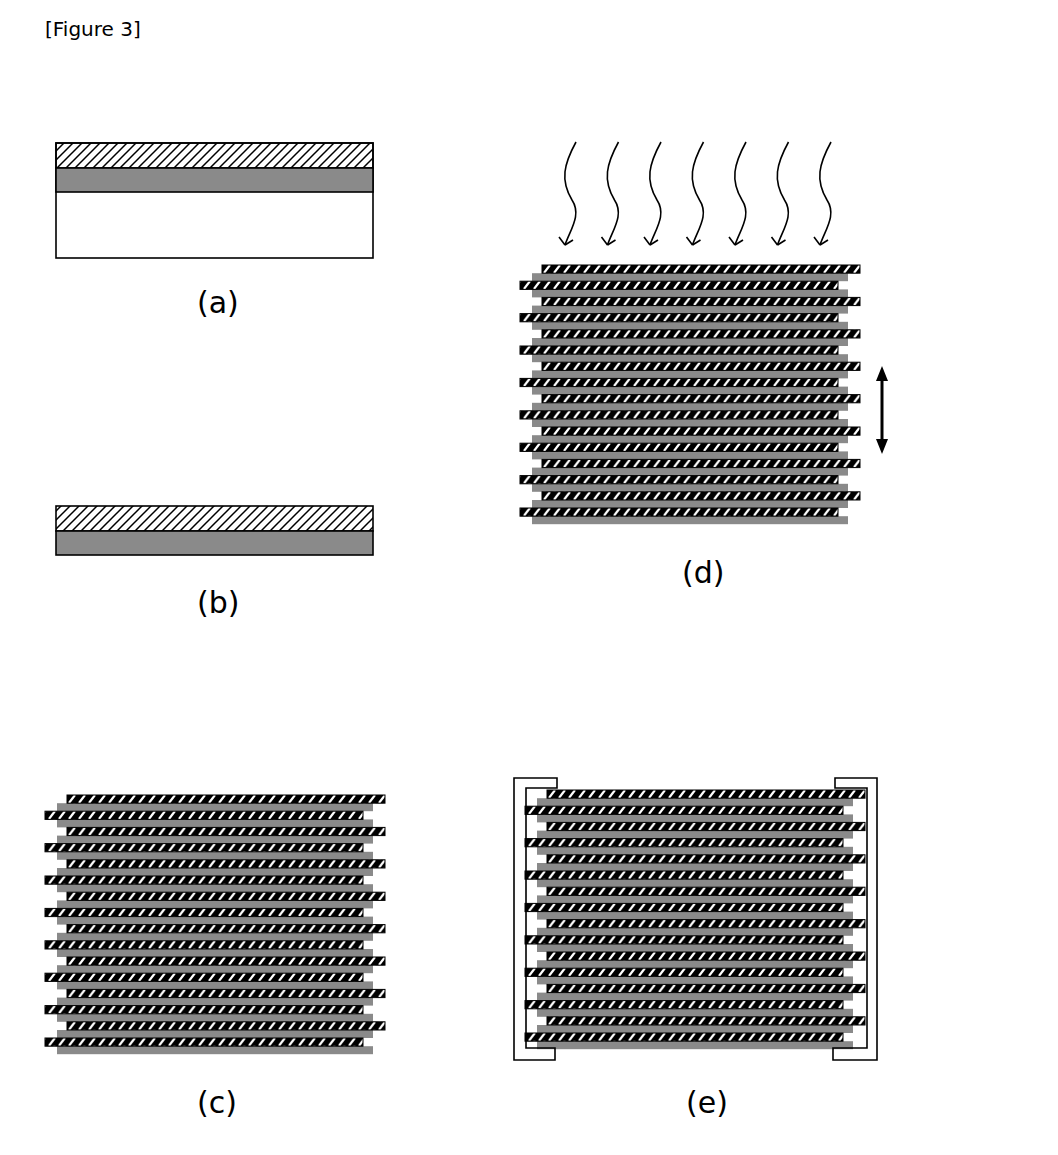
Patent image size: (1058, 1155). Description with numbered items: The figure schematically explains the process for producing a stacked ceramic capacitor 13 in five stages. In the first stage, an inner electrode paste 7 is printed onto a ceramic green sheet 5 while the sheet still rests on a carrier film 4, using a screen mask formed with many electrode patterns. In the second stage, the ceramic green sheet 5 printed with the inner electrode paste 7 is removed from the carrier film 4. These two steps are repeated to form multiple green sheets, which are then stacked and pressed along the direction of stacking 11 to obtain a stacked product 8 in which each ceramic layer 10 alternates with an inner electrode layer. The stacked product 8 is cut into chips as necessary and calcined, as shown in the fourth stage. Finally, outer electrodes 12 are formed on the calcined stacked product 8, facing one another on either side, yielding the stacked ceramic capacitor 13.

The carrier film 4 is at (343, 238).
The ceramic green sheet 5 is at (347, 180).
The inner electrode paste 7 is at (347, 140).
The stacked product 8 is at (347, 792).
The ceramic layer 10 is at (847, 312).
The direction of stacking 11 is at (905, 410).
The outer electrode 12 is at (862, 808).
The stacked ceramic capacitor 13 is at (724, 885).